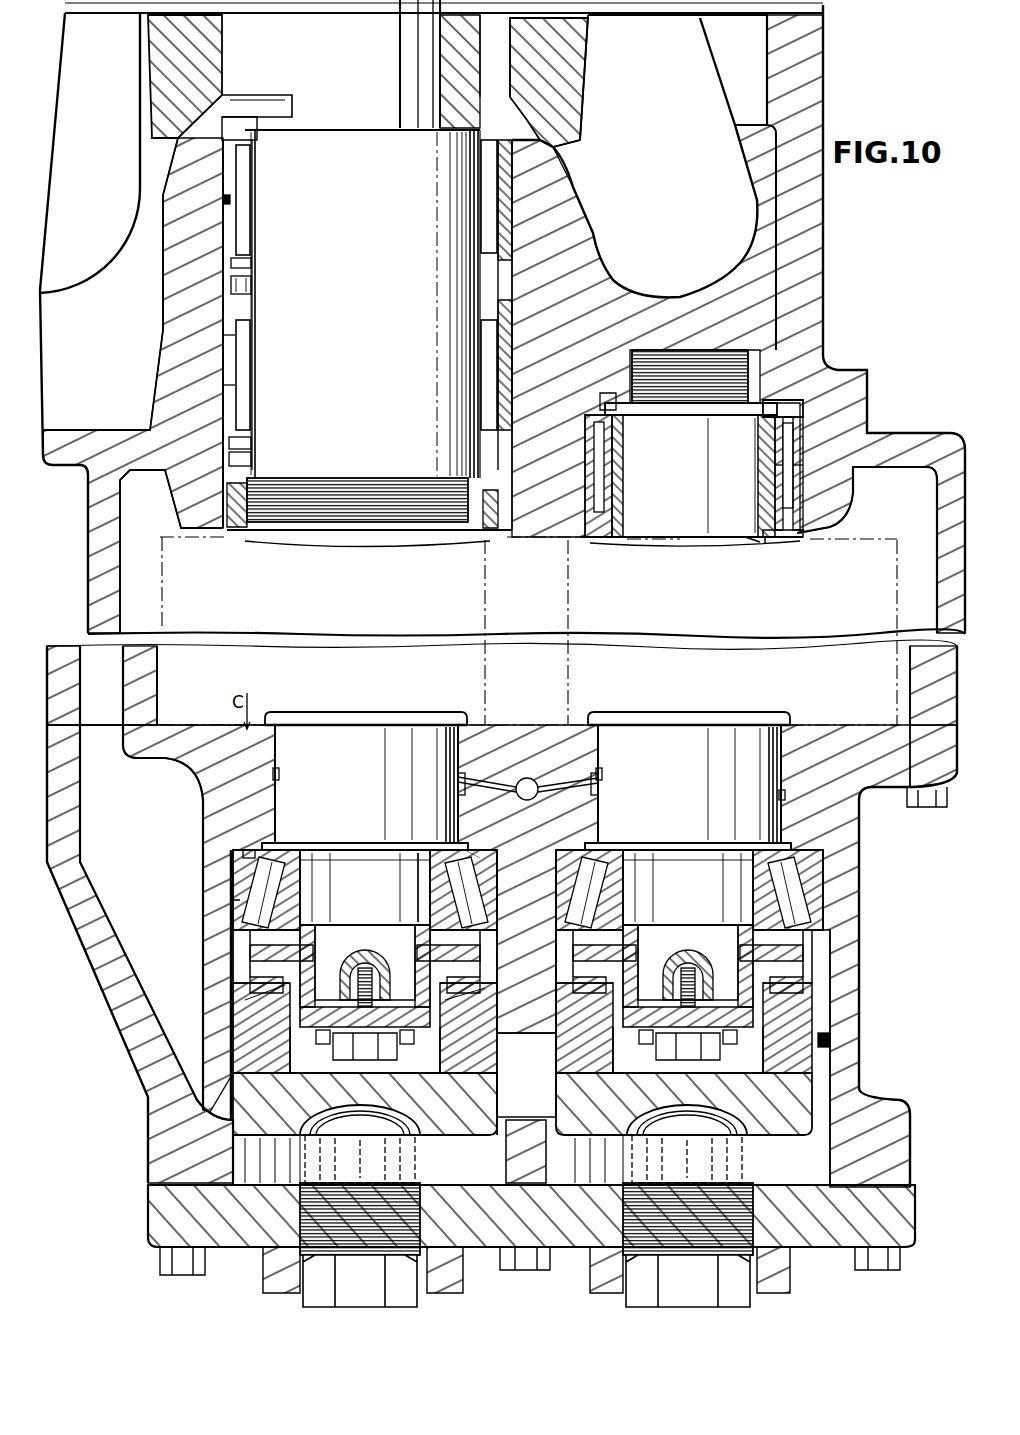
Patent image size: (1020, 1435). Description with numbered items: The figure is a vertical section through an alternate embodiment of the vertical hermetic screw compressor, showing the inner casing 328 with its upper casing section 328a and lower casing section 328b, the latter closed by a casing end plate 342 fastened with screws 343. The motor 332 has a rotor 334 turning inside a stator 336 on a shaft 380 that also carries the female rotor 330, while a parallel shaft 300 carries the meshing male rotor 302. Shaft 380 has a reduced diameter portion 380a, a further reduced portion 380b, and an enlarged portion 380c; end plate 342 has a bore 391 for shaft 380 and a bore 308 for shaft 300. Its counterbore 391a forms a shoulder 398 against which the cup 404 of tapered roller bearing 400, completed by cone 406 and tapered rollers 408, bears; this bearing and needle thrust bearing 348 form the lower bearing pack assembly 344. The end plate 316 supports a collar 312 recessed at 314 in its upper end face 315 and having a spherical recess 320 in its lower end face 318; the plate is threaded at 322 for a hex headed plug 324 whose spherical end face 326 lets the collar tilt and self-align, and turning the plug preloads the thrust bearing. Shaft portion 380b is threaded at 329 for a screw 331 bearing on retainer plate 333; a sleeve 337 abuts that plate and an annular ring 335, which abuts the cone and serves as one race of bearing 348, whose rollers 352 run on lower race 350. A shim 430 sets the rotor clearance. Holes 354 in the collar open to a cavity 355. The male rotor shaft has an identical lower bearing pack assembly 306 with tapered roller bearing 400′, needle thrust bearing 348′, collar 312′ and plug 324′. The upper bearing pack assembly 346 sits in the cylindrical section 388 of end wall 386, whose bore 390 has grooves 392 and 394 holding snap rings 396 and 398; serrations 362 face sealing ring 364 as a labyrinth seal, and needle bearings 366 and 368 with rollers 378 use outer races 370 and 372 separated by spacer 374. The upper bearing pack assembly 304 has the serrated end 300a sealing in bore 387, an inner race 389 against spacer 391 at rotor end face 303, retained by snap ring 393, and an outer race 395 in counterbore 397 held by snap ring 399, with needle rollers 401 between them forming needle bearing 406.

The shaft 300 is at (770, 765).
The serrated end of shaft 300a is at (700, 362).
The male rotor 302 is at (768, 545).
The end face of male rotor 303 is at (600, 545).
The upper bearing pack assembly 304 is at (795, 410).
The lower bearing pack assembly 306 is at (810, 885).
The bore 308 is at (598, 800).
The cylinder or collar 312 is at (490, 985).
The second collar or cylinder 312′ is at (835, 1040).
The recess 314 is at (450, 1030).
The upper end face 315 is at (450, 1005).
The end plate 316 is at (215, 1265).
The lower end face 318 is at (232, 1135).
The spherical recess 320 is at (390, 1108).
The tapped and threaded hole 322 is at (295, 1215).
The hex headed threaded plug 324 is at (345, 1310).
The threaded end plug 324′ is at (752, 1160).
The spherical end face of plug 326 is at (352, 1130).
The inner casing or housing 328 is at (130, 1058).
The upper casing section 328a is at (90, 520).
The lower casing section 328b is at (165, 680).
The tapped and threaded center 329 is at (365, 1046).
The female rotor 330 is at (300, 545).
The screw 331 is at (412, 1032).
The motor 332 is at (725, 78).
The circular retainer plate 333 is at (290, 1035).
The rotor 334 is at (540, 25).
The annular ring 335 is at (290, 921).
The stator 336 is at (650, 22).
The sleeve or cylinder 337 is at (285, 1000).
The casing end plate 342 is at (800, 835).
The screws 343 is at (928, 805).
The lower bearing pack assembly 344 is at (490, 858).
The upper bearing pack assembly 346 is at (515, 185).
The needle thrust bearing 348 is at (240, 958).
The needle thrust bearing 348′ is at (818, 963).
The annular ring or lower race 350 is at (480, 963).
The needle bearing rollers 352 is at (485, 930).
The holes 354 is at (455, 1098).
The cavity 355 is at (111, 863).
The serrations 362 is at (235, 505).
The annular sealing ring 364 is at (226, 490).
The upper needle bearing 366 is at (265, 262).
The lower needle bearing 368 is at (262, 305).
The outer race 370 is at (228, 204).
The outer race 372 is at (220, 393).
The annular spacer or ring 374 is at (225, 285).
The needle bearing rollers 378 is at (255, 195).
The shaft 380 is at (470, 775).
The reduced diameter portion 380a is at (352, 880).
The further reduced diameter portion 380b is at (365, 966).
The enlarged diameter portion 380c is at (505, 345).
The transverse end wall 386 is at (880, 480).
The bore 387 is at (762, 362).
The right angle cylindrical section 388 is at (90, 189).
The radially inner race member 389 is at (758, 458).
The bore 390 is at (228, 345).
The bore; spacer 391 is at (755, 545).
The counterbore 391a is at (230, 900).
The circular groove 392 is at (170, 170).
The snap ring 393 is at (625, 425).
The circular groove 394 is at (228, 445).
The outer race member 395 is at (800, 505).
The snap ring 396 is at (240, 113).
The counterbore 397 is at (800, 470).
The snap ring; shoulder 398 is at (252, 462).
The second snap ring 399 is at (808, 538).
The tapered roller bearing assembly 400 is at (462, 850).
The tapered roller bearing 400′ is at (808, 855).
The needle bearing rollers 401 is at (585, 495).
The radially outer cup 404 is at (235, 870).
The radially inner annular cone; needle bearing 406 is at (800, 450).
The tapered rollers 408 is at (285, 892).
The shim 430 is at (405, 905).